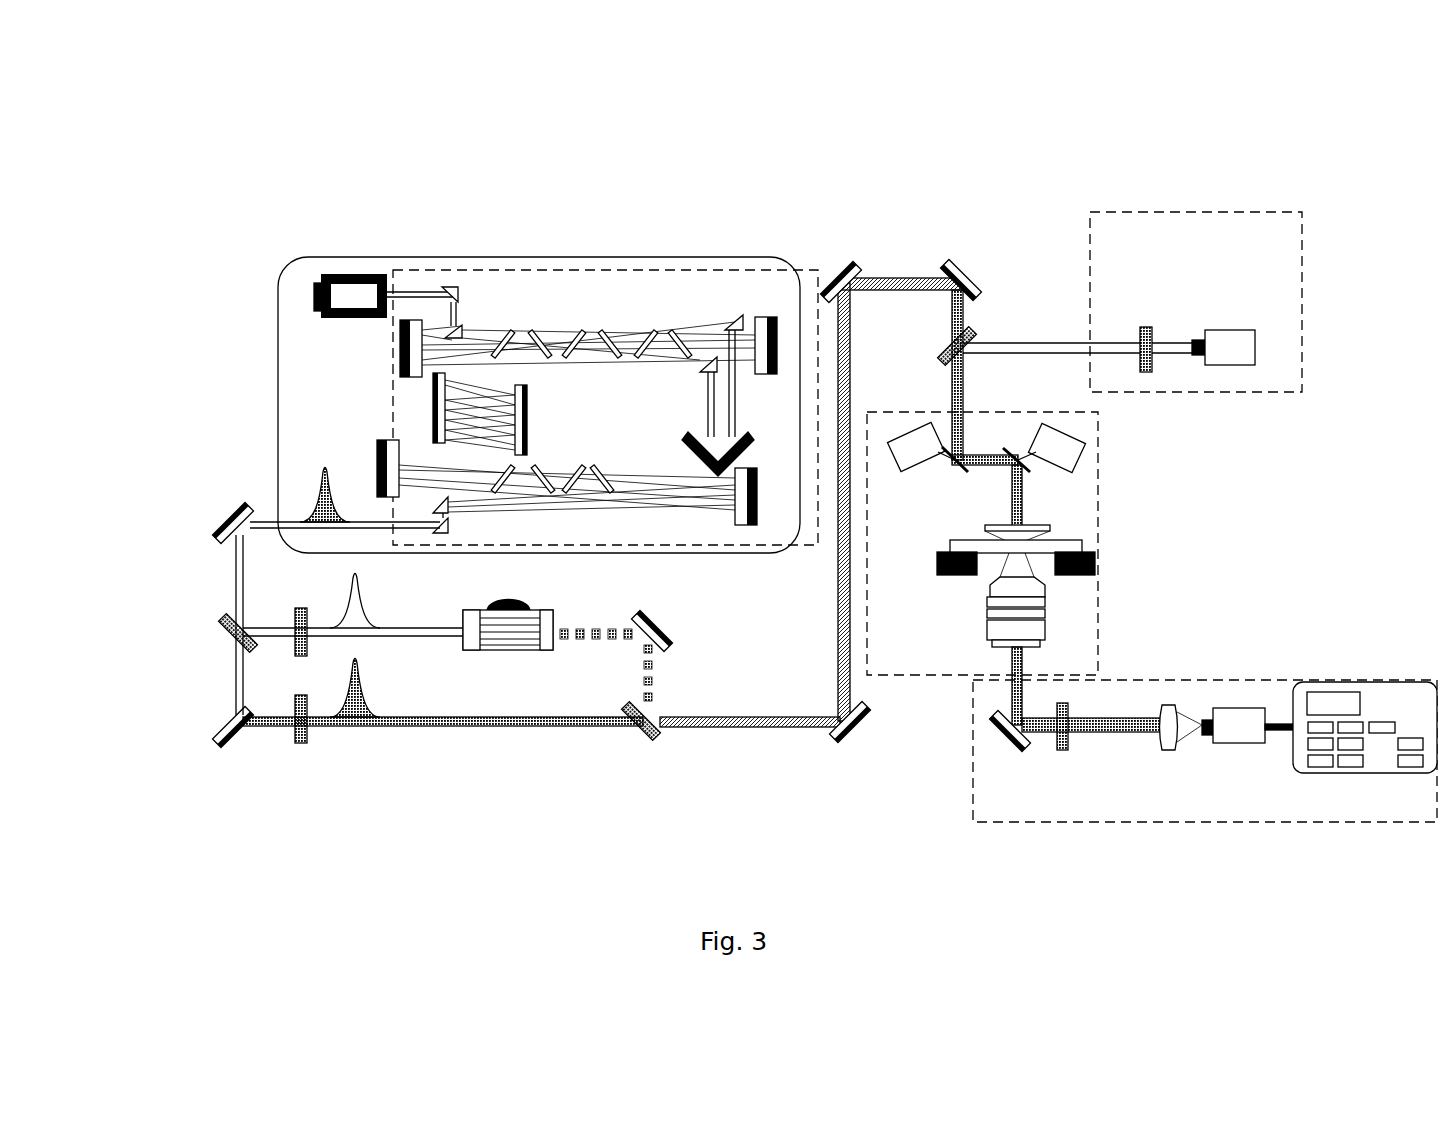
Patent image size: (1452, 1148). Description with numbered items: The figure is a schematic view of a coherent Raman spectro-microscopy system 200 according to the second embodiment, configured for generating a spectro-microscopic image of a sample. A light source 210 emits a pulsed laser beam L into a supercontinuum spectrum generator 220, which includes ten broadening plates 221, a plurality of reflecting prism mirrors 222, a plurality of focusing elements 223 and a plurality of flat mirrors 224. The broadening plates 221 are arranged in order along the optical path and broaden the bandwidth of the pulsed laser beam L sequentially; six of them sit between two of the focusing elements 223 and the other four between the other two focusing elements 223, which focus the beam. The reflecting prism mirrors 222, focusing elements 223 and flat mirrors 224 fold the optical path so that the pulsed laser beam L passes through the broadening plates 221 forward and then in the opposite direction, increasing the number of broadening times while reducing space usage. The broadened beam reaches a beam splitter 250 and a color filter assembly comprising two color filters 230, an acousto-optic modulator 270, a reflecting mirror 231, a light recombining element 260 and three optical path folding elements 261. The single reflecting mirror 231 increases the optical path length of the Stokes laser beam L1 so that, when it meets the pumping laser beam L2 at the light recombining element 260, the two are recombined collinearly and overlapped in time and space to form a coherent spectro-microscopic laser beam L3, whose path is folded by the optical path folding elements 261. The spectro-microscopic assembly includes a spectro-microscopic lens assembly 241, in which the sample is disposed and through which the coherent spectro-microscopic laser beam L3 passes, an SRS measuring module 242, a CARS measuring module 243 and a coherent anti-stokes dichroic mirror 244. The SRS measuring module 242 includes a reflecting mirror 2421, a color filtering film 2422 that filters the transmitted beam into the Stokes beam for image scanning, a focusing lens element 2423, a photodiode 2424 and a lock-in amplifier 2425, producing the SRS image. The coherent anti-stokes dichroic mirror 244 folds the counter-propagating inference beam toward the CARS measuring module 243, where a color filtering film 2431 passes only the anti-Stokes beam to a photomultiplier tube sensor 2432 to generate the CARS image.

The coherent Raman spectro-microscopy system 200 is at (228, 72).
The light source 210 is at (355, 268).
The pulsed laser beam L is at (415, 290).
The supercontinuum spectrum generator 220 is at (555, 270).
The broadening plates 221 is at (605, 330).
The reflecting prism mirrors 222 is at (455, 285).
The focusing elements 223 is at (765, 317).
The flat mirrors 224 is at (433, 408).
The color filters 230 is at (300, 655).
The reflecting mirror 231 is at (668, 652).
The spectro-microscopic lens assembly 241 is at (1100, 530).
The SRS measuring module 242 is at (990, 822).
The CARS measuring module 243 is at (1180, 212).
The coherent anti-stokes dichroic mirror 244 is at (975, 335).
The beam splitter 250 is at (222, 628).
The light recombining element 260 is at (655, 745).
The optical path folding elements 261 is at (848, 268).
The acousto-optic modulator 270 is at (510, 650).
The reflecting mirror 2421 is at (1005, 748).
The color filtering film 2422 is at (1062, 750).
The focusing lens element 2423 is at (1168, 705).
The photodiode 2424 is at (1240, 743).
The lock-in amplifier 2425 is at (1365, 773).
The color filtering film 2431 is at (1145, 327).
The photomultiplier tube sensor 2432 is at (1230, 330).
The Stokes laser beam L1 is at (273, 640).
The pumping laser beam L2 is at (263, 727).
The coherent spectro-microscopic laser beam L3 is at (818, 728).